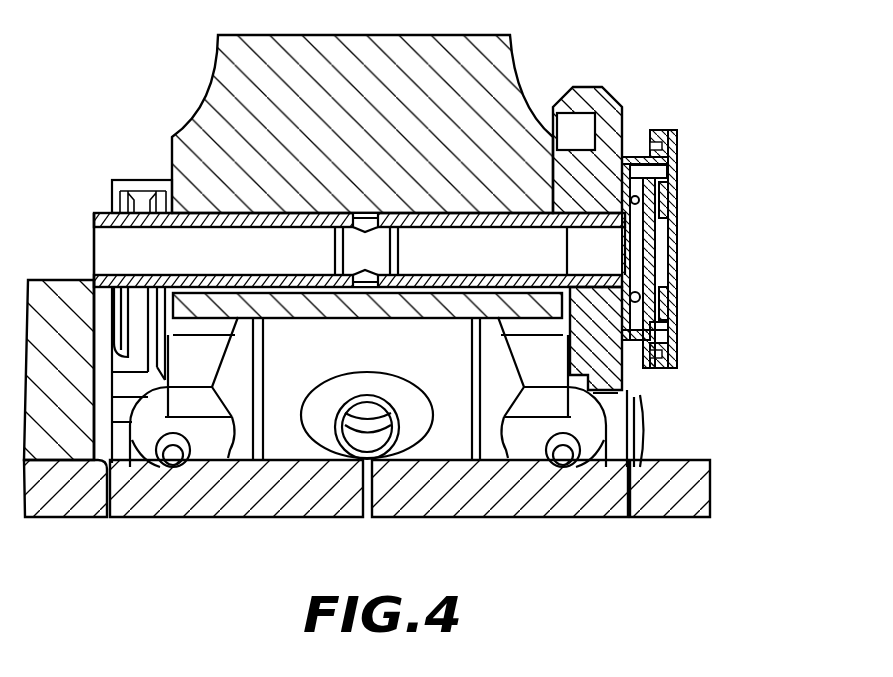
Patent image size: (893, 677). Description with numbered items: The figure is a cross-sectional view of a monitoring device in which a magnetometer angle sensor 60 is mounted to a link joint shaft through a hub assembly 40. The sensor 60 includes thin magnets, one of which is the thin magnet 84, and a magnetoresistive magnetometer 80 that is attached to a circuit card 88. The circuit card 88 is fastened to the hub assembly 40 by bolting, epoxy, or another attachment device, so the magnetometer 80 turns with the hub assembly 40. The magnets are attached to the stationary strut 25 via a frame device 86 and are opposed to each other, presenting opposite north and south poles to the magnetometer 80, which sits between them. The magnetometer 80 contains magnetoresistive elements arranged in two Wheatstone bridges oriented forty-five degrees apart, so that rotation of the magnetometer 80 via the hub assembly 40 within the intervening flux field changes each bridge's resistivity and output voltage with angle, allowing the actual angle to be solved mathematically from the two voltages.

The stationary strut 25 is at (598, 97).
The hub assembly 40 is at (597, 250).
The magnetometer angle sensor 60 is at (724, 216).
The magnetoresistive magnetometer 80 is at (656, 250).
The thin magnet 84 is at (666, 190).
The frame device 86 is at (678, 336).
The circuit card 88 is at (678, 323).